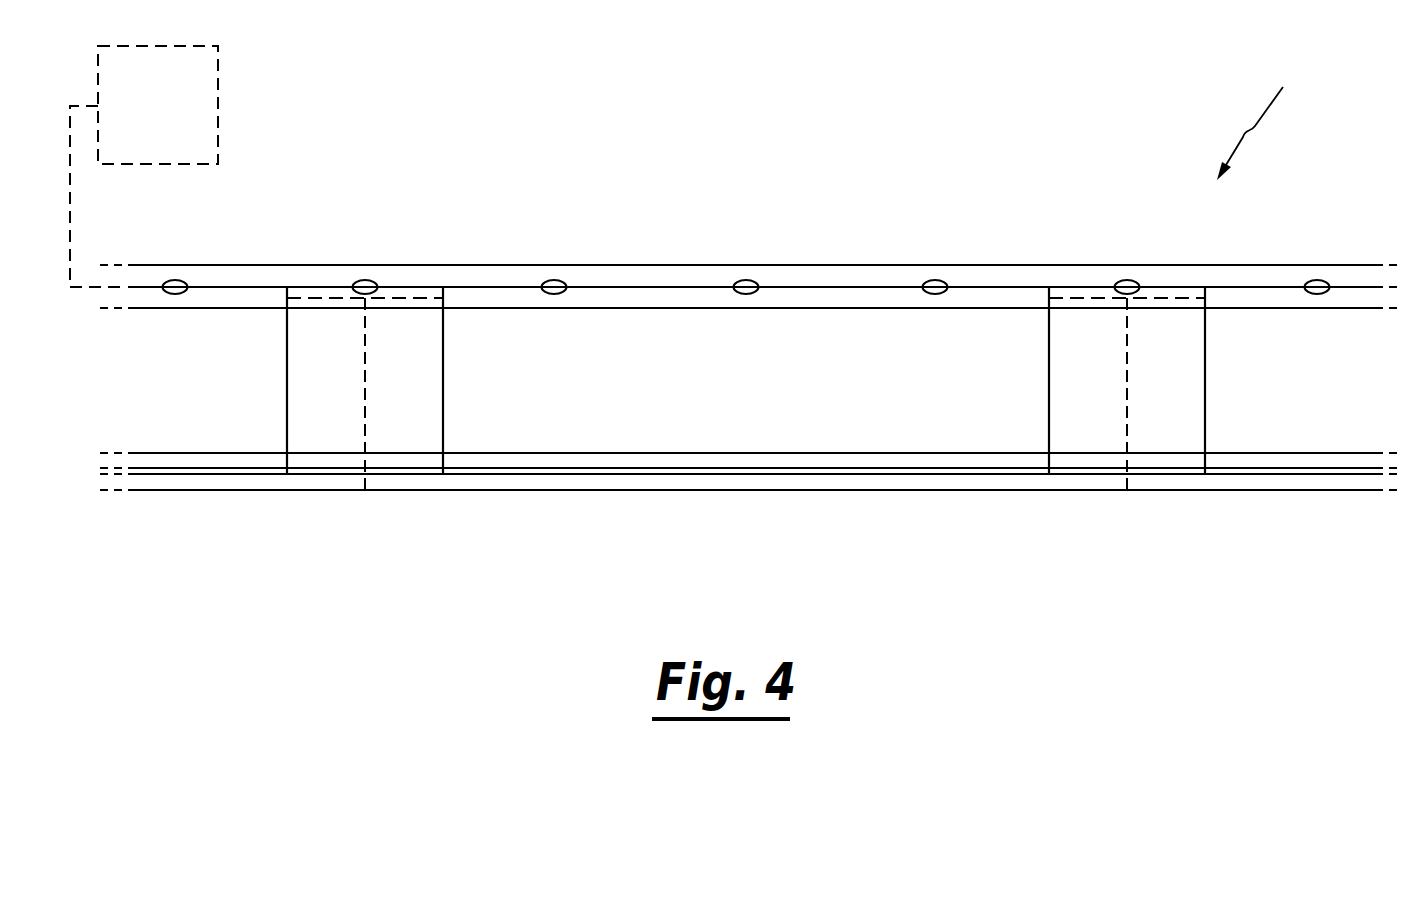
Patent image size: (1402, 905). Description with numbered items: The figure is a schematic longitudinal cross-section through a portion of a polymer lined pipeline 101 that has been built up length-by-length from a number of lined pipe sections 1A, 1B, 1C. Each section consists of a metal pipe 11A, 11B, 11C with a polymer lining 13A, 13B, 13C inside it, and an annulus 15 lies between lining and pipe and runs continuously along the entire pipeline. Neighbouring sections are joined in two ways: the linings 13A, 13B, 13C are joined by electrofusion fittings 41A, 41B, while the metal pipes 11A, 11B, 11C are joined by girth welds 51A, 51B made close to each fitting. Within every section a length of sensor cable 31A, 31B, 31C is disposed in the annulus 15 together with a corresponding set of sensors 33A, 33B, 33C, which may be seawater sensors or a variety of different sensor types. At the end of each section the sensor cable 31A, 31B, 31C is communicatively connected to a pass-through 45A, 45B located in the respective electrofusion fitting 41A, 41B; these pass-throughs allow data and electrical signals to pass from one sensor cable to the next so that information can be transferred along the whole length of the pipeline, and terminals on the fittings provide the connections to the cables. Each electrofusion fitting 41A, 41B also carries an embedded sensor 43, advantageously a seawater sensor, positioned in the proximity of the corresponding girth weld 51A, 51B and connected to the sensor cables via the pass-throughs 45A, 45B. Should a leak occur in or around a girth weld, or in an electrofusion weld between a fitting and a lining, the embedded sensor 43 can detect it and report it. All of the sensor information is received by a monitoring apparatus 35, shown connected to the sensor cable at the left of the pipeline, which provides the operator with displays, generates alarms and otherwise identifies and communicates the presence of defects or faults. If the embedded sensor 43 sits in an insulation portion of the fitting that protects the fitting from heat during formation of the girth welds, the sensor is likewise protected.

The electrical machine assembly 101 is at (1263, 115).
The lined pipe section 1A is at (303, 417).
The lined pipe section 1B is at (746, 418).
The lined pipe section 1C is at (1194, 415).
The metal pipe 11A is at (311, 480).
The metal pipe 11B is at (478, 480).
The metal pipe 11C is at (1226, 480).
The lining 13A is at (167, 463).
The lining 13B is at (656, 463).
The lining 13C is at (1342, 463).
The annulus 15 is at (813, 472).
The sensor cable 31A is at (252, 287).
The sensor cable 31B is at (653, 287).
The sensor cable 31C is at (1363, 287).
The sensor 33A is at (175, 280).
The sensor 33B is at (554, 280).
The sensor 33C is at (1312, 280).
The monitoring apparatus 35 is at (144, 166).
The electrofusion fitting 41A is at (383, 378).
The electrofusion fitting 41B is at (1105, 378).
The embedded sensor 43 is at (372, 280).
The pass-through 45A is at (430, 298).
The pass-through 45B is at (1062, 297).
The girth weld 51A is at (365, 280).
The girth weld 51B is at (1132, 280).